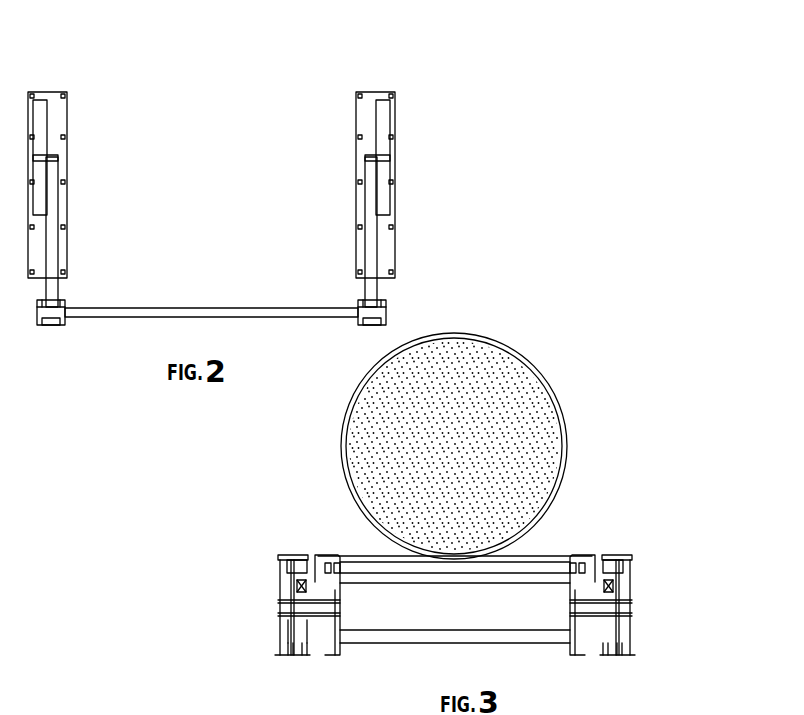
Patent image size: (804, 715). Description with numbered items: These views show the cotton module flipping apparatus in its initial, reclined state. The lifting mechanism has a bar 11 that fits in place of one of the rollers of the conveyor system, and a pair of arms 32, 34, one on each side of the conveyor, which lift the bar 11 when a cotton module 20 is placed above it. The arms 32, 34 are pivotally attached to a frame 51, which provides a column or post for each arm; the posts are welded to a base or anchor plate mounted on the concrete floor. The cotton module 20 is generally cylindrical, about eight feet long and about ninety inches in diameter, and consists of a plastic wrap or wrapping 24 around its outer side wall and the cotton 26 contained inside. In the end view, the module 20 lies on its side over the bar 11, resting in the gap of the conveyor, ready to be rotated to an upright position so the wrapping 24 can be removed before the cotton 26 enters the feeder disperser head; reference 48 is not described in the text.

In FIG. 2, the bar 11 is at (127, 308).
In FIG. 3, the bar 11 is at (543, 558).
In FIG. 3, the cotton module 20 is at (533, 363).
In FIG. 3, the plastic wrap 24 is at (358, 387).
In FIG. 3, the cotton 26 is at (372, 458).
In FIG. 2, the arm 32 is at (373, 197).
In FIG. 2, the arm 34 is at (50, 250).
In FIG. 3, the lower rail 48 is at (451, 672).
In FIG. 3, the frame 51 is at (312, 635).